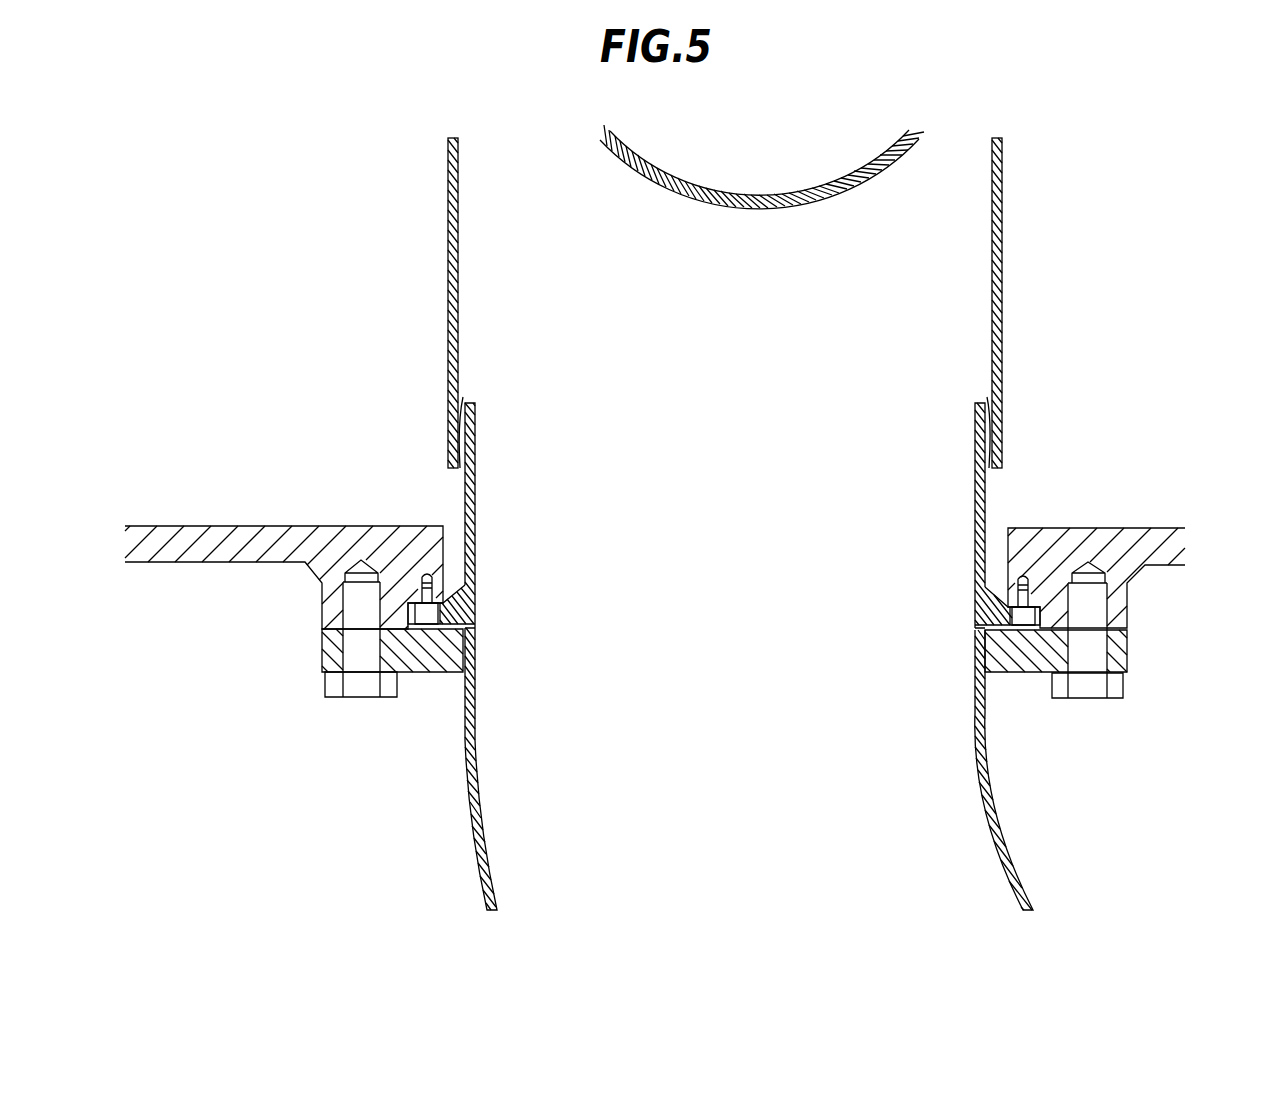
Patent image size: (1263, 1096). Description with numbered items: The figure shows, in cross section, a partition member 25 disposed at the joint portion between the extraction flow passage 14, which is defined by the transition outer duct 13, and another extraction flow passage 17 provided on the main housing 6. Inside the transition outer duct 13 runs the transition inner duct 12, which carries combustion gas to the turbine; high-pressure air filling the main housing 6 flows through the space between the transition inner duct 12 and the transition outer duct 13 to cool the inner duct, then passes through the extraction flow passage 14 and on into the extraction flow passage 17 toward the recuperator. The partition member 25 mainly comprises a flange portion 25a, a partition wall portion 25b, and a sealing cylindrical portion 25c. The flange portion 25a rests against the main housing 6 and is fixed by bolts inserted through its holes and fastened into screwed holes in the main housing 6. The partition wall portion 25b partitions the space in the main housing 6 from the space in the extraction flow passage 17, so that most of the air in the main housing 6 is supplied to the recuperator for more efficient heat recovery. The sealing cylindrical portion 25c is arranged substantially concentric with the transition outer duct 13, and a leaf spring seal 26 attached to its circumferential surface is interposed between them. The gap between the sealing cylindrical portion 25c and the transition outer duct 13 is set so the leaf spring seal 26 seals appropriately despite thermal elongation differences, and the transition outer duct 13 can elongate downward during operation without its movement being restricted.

The main housing 6 is at (200, 562).
The transition inner duct 12 is at (732, 209).
The transition outer duct 13 is at (673, 303).
The extraction flow passage 14 is at (997, 303).
The extraction flow passage 17 is at (478, 778).
The partition member 25 is at (715, 515).
The flange portion 25a is at (455, 605).
The partition wall portion 25b is at (476, 526).
The sealing cylindrical portion 25c is at (476, 430).
The leaf spring seal 26 is at (462, 398).